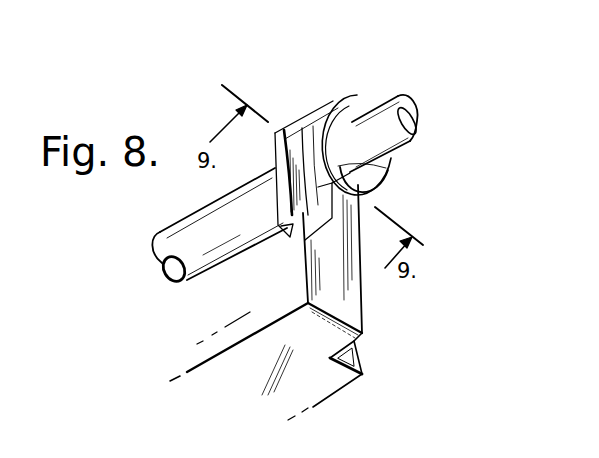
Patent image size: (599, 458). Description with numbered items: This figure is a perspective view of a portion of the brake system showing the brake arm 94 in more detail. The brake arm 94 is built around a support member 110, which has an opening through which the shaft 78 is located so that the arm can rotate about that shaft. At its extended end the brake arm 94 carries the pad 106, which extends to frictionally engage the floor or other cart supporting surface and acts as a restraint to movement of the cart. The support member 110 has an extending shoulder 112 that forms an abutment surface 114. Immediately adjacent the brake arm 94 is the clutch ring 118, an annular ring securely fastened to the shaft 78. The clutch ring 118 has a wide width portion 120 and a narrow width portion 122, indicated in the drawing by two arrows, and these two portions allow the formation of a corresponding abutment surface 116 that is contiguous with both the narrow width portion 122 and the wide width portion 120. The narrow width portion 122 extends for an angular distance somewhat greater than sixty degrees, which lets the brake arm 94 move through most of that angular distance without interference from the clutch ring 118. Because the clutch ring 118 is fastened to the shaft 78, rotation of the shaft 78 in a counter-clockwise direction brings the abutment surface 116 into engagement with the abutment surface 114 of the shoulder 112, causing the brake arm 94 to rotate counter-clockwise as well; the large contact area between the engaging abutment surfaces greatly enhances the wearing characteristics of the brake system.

The shaft 78 is at (390, 113).
The brake arm 94 is at (346, 218).
The pad 106 is at (321, 383).
The support member 110 is at (347, 274).
The shoulder 112 is at (350, 207).
The abutment surface 114 is at (315, 239).
The abutment surface 116 is at (350, 115).
The clutch ring 118 is at (322, 135).
The wide width portion 120 is at (331, 122).
The narrow width portion 122 is at (378, 174).